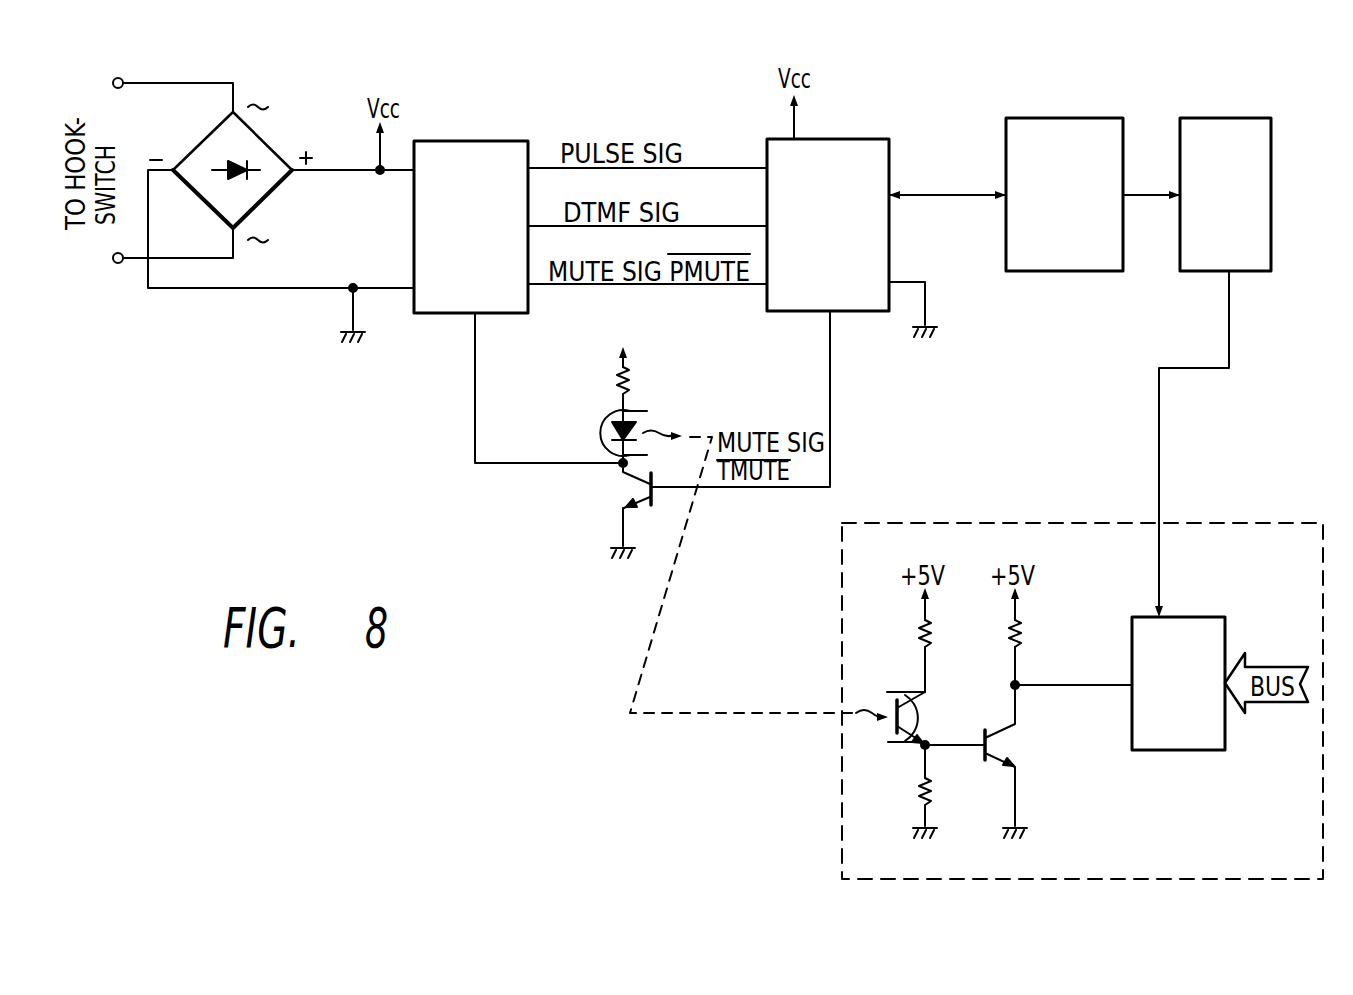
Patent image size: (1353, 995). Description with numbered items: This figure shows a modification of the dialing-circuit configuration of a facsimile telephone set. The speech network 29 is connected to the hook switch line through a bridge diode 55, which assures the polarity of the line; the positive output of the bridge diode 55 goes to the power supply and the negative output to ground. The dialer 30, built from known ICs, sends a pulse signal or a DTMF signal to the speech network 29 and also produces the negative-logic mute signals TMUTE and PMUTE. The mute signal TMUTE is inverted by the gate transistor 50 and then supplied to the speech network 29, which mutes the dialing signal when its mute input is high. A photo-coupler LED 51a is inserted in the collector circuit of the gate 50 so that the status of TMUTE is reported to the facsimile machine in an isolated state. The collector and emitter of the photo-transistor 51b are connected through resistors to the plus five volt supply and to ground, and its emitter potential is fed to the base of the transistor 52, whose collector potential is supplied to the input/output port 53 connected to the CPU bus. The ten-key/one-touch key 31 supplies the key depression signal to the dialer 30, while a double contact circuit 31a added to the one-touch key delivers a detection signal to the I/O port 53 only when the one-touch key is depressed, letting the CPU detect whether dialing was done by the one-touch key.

The bridge diode 55 is at (270, 148).
The speech network 29 is at (508, 140).
The dialer 30 is at (858, 138).
The ten-key/one-touch key 31 is at (1098, 118).
The double contact circuit 31a is at (1244, 118).
The photo-coupler LED 51a is at (648, 410).
The gate (transistor) 50 is at (630, 490).
The photo-transistor 51b is at (898, 692).
The transistor 52 is at (1002, 746).
The input/output port 53 is at (1202, 616).